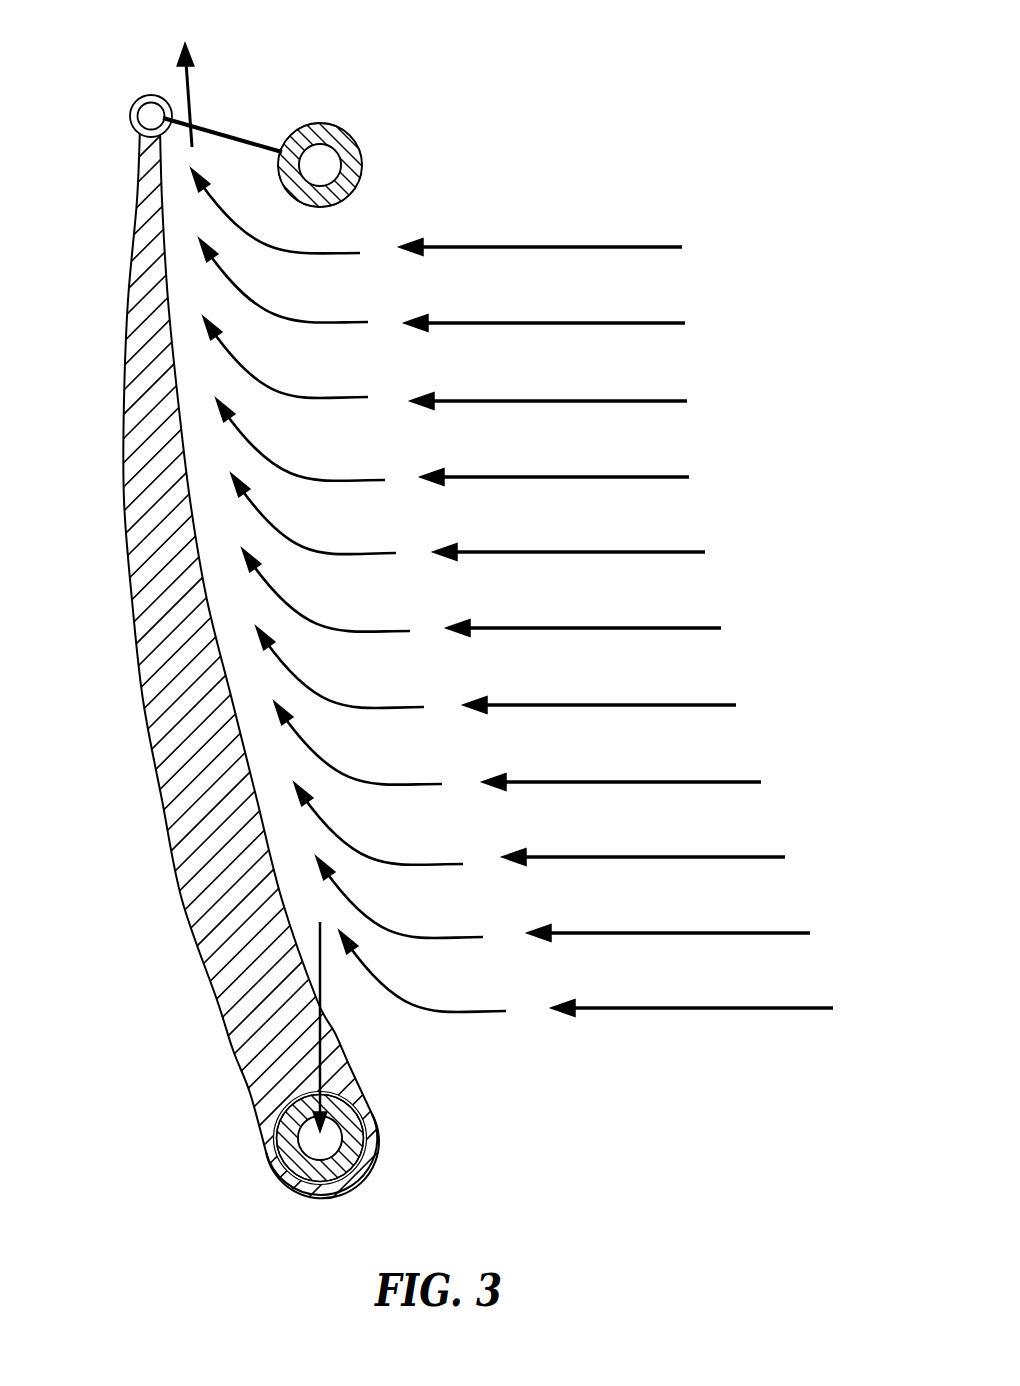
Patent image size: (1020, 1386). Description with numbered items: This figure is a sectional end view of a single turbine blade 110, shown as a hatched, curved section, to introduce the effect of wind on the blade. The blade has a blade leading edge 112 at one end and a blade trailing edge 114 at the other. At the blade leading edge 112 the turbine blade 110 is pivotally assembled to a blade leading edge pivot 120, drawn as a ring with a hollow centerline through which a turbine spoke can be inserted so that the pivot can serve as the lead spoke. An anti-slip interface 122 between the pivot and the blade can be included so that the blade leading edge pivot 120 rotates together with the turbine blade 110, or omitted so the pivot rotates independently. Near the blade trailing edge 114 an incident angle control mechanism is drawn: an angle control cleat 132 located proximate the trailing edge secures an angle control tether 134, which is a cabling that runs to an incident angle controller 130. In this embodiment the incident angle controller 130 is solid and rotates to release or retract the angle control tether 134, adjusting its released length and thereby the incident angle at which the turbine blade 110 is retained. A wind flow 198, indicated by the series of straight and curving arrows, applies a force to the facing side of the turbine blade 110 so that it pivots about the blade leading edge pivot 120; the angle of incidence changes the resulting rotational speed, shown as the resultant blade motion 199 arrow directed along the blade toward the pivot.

The turbine blade 110 is at (133, 627).
The blade leading edge 112 is at (352, 1207).
The blade trailing edge 114 is at (158, 74).
The blade leading edge pivot 120 is at (378, 1130).
The anti-slip interface 122 is at (262, 1147).
The incident angle controller 130 is at (347, 145).
The angle control cleat 132 is at (137, 107).
The angle control tether 134 is at (233, 132).
The wind flow 198 is at (611, 203).
The resultant blade motion 199 is at (337, 1027).